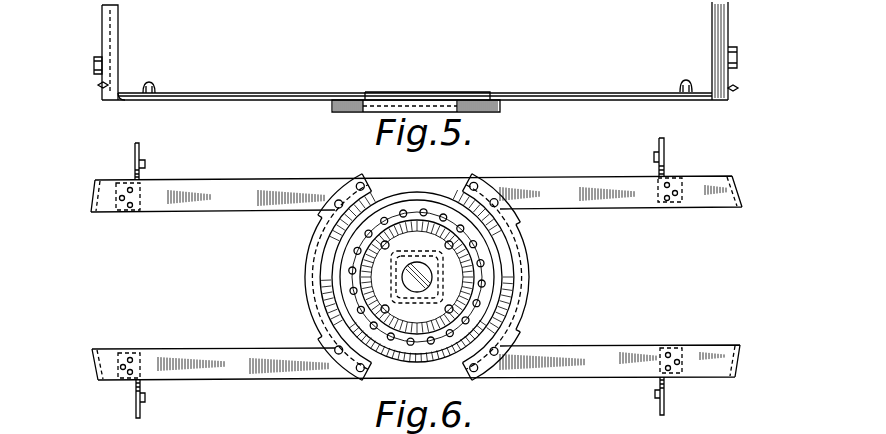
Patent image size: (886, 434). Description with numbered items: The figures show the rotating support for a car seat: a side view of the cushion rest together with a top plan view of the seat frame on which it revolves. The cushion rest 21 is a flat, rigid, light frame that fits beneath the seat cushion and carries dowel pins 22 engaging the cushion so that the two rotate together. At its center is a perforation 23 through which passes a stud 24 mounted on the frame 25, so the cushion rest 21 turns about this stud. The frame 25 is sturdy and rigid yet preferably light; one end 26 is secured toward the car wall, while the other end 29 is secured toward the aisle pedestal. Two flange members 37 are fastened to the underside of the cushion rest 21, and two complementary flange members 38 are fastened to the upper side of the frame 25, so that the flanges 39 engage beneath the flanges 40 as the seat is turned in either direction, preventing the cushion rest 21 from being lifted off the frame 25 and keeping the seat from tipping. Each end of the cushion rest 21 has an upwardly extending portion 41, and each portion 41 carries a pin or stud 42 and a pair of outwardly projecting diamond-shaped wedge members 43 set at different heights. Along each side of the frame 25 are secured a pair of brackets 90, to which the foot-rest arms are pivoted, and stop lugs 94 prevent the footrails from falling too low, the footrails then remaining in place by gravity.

In FIG. 5, the cushion rest 21 is at (588, 94).
In FIG. 5, the dowel pins 22 is at (152, 90).
In FIG. 5, the perforation 23 is at (430, 93).
In FIG. 6, the stud 24 is at (410, 274).
In FIG. 6, the frame 25 is at (488, 318).
In FIG. 6, the one end of frame 26 is at (92, 200).
In FIG. 6, the other end of frame 29 is at (743, 201).
In FIG. 5, the flange members 37 is at (486, 110).
In FIG. 6, the complementary flange members 38 is at (482, 195).
In FIG. 5, the flanges 39 is at (368, 110).
In FIG. 6, the flanges 40 is at (348, 222).
In FIG. 5, the upwardly extending portions 41 is at (108, 25).
In FIG. 5, the pin or stud 42 is at (97, 66).
In FIG. 5, the wedge members 43 is at (100, 90).
In FIG. 6, the brackets 90 is at (135, 164).
In FIG. 6, the stop lugs 94 is at (146, 163).